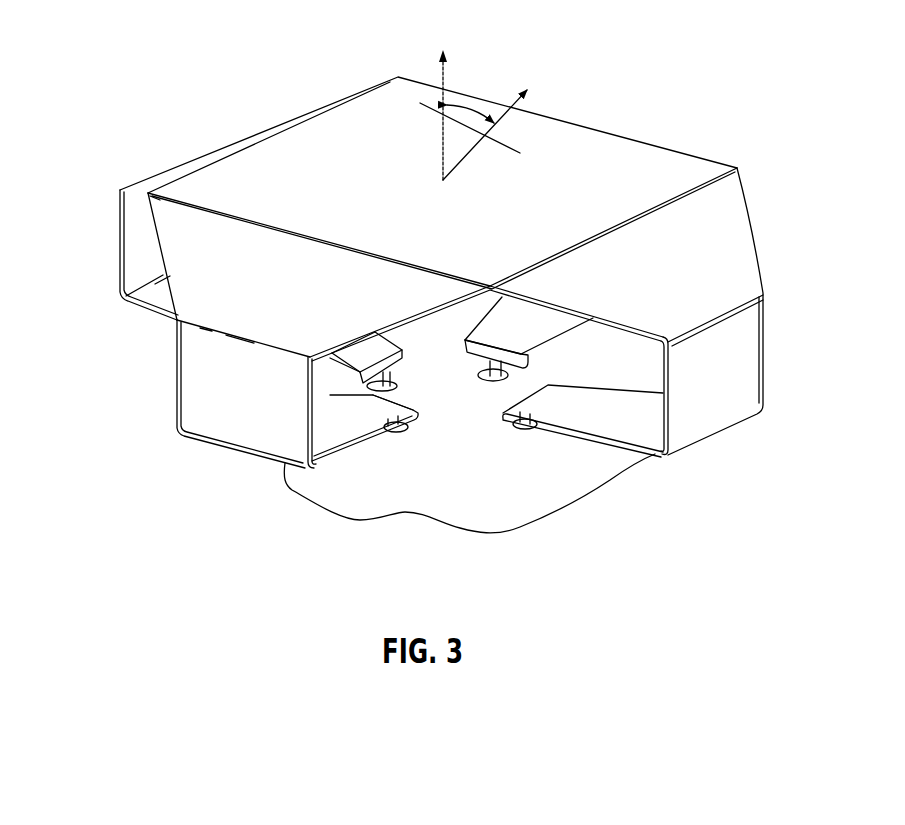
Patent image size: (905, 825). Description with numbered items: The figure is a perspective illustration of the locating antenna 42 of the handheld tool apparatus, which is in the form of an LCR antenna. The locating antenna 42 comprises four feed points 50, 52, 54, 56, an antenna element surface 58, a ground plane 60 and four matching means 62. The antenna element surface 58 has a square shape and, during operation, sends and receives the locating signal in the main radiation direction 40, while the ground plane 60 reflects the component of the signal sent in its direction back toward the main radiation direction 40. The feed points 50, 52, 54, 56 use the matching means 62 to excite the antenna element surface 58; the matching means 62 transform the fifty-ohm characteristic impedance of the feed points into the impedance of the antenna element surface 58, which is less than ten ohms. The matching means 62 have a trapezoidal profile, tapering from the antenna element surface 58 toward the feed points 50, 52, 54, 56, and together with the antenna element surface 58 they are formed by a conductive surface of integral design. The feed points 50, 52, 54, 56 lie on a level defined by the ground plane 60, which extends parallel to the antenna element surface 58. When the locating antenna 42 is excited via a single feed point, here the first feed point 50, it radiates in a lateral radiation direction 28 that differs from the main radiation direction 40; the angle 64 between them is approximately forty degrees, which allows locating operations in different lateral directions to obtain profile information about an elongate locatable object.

The locating antenna 42 is at (289, 74).
The main radiation direction 40 is at (446, 75).
The angle 64 is at (473, 107).
The lateral radiation direction 28 is at (532, 89).
The antenna element surface 58 is at (591, 170).
The matching means 62 is at (140, 236).
The first feed point 50 is at (398, 387).
The feed point 54 is at (487, 384).
The feed point 56 is at (396, 434).
The feed point 52 is at (527, 426).
The ground plane 60 is at (509, 495).